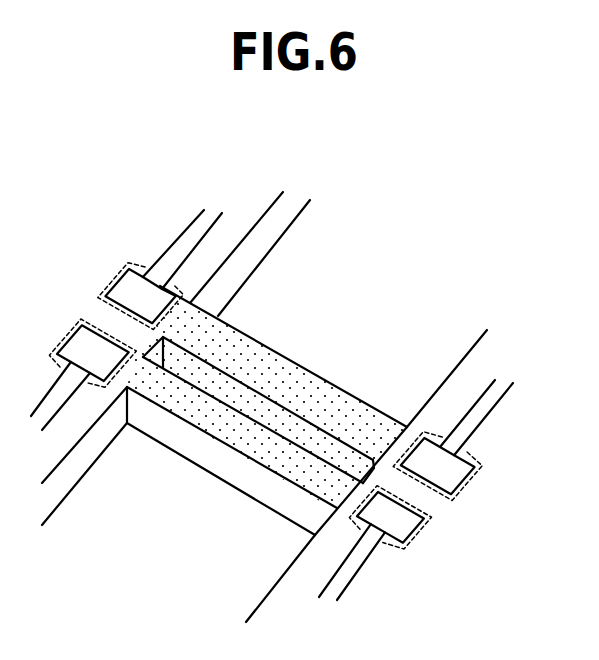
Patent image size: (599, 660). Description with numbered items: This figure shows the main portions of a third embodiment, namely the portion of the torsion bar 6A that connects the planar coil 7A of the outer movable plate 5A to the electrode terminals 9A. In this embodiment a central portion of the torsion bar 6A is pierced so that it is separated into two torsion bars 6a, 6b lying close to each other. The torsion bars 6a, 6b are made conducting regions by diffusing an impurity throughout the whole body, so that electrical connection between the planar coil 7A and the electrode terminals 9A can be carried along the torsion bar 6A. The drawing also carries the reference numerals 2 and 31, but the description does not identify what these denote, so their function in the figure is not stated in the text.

The lead wire 2 is at (252, 209).
The electrode terminals 9A is at (128, 288).
The torsion bar 6a is at (268, 368).
The outer movable plate 5A is at (472, 368).
The planar coil 7A is at (488, 405).
The connection pads 31 is at (423, 530).
The torsion bar 6A is at (224, 454).
The torsion bar 6b is at (224, 462).